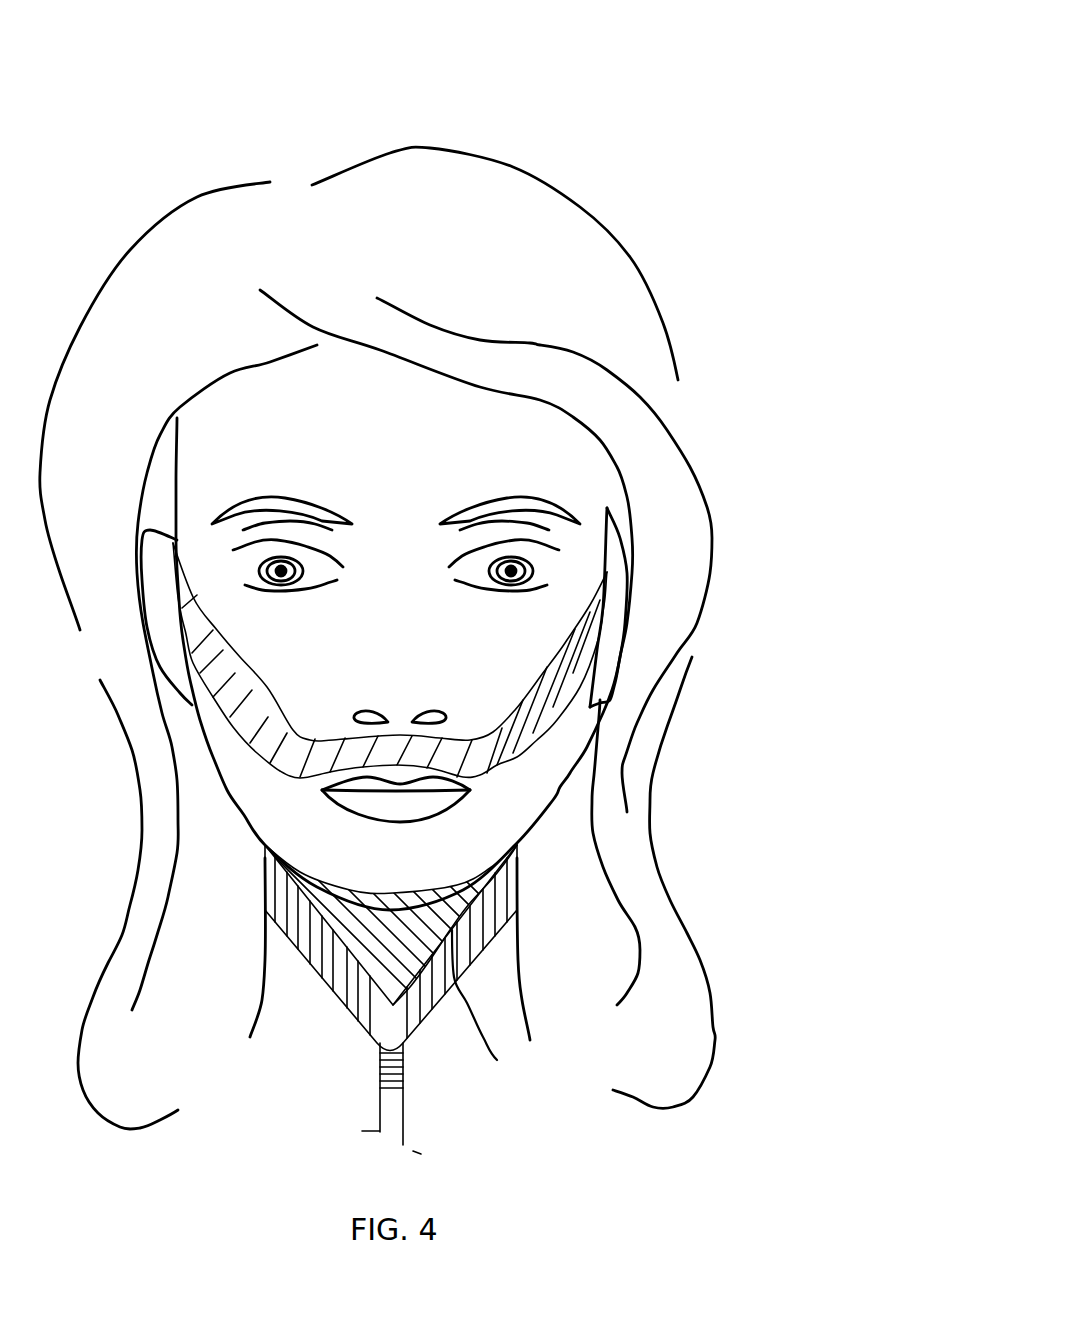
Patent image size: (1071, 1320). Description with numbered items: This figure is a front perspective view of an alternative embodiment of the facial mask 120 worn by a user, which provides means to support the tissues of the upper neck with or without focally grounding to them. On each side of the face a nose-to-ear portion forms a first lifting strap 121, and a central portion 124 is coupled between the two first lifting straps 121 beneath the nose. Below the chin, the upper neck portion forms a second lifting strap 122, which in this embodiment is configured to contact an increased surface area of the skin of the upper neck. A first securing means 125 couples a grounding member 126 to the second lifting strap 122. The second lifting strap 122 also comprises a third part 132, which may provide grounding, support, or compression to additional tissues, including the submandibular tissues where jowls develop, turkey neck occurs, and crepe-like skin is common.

The facial mask 120 is at (752, 117).
The first lifting strap 121 is at (228, 680).
The second lifting strap 122 is at (304, 997).
The central portion 124 is at (390, 750).
The first securing means 125 is at (400, 1076).
The grounding member 126 is at (387, 1127).
The third part 132 is at (497, 1060).